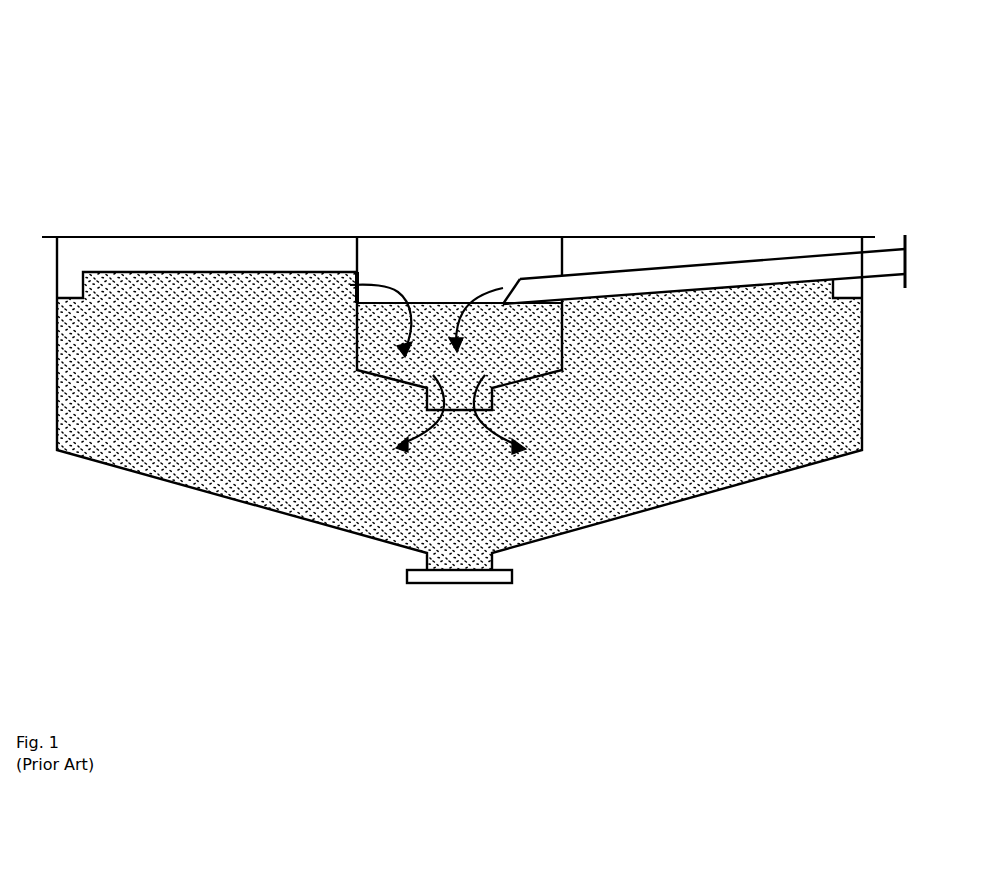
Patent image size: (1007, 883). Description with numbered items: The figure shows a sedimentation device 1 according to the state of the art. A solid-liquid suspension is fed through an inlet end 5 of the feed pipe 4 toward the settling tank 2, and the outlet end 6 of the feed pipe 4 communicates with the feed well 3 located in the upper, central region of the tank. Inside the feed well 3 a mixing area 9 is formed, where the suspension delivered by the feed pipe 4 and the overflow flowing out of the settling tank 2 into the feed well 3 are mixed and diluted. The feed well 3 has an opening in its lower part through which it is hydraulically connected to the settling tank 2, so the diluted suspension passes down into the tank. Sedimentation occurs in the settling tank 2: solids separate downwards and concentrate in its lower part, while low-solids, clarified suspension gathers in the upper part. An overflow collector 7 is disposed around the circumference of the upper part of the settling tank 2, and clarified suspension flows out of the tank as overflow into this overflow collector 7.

The sedimentation device 1 is at (773, 107).
The settling tank 2 is at (213, 510).
The feed well 3 is at (390, 258).
The feed pipe 4 is at (688, 280).
The inlet end 5 is at (910, 302).
The outlet end 6 is at (515, 278).
The overflow collector 7 is at (72, 282).
The mixing area 9 is at (445, 317).